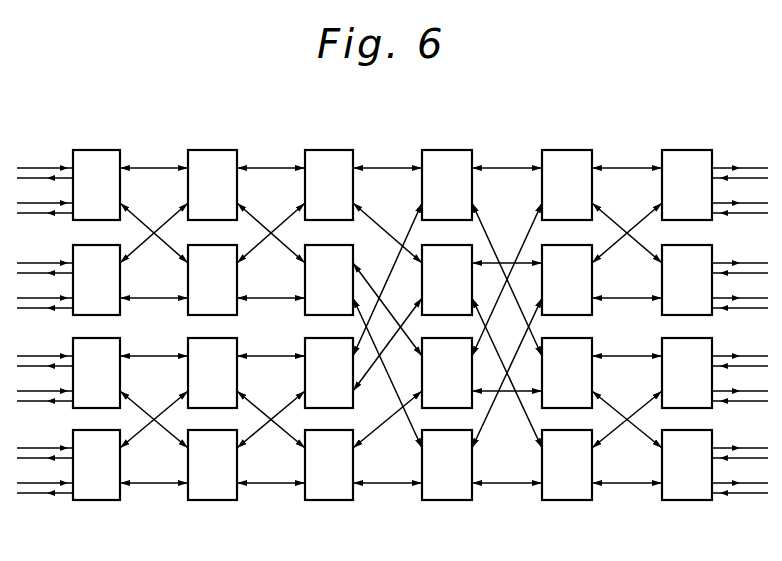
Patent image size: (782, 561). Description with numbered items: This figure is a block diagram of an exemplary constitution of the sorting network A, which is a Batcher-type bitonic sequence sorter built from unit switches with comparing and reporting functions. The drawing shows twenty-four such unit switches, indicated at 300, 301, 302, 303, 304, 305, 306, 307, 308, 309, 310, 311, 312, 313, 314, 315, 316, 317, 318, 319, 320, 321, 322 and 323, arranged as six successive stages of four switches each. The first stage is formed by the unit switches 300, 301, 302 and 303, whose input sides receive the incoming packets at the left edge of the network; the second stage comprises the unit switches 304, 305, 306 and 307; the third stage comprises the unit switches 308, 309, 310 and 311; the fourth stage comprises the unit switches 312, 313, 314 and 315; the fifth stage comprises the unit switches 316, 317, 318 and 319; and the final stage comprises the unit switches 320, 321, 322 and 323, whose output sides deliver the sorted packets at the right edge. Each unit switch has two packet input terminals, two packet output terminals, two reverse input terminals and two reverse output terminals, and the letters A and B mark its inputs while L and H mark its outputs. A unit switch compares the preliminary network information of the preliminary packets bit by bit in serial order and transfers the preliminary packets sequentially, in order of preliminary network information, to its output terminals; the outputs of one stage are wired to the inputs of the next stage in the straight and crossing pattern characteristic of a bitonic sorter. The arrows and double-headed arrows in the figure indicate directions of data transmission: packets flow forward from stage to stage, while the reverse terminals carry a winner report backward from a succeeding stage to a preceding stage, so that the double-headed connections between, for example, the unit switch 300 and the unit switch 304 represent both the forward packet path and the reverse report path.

The unit switch with comparing and reporting functions 300 is at (97, 150).
The unit switch with comparing and reporting functions 301 is at (86, 245).
The unit switch with comparing and reporting functions 302 is at (86, 338).
The unit switch with comparing and reporting functions 303 is at (86, 430).
The unit switch with comparing and reporting functions 304 is at (213, 150).
The unit switch with comparing and reporting functions 305 is at (201, 245).
The unit switch with comparing and reporting functions 306 is at (201, 338).
The unit switch with comparing and reporting functions 307 is at (201, 430).
The unit switch with comparing and reporting functions 308 is at (329, 150).
The unit switch with comparing and reporting functions 309 is at (318, 245).
The unit switch with comparing and reporting functions 310 is at (318, 338).
The unit switch with comparing and reporting functions 311 is at (318, 430).
The unit switch with comparing and reporting functions 312 is at (447, 150).
The unit switch with comparing and reporting functions 313 is at (435, 245).
The unit switch with comparing and reporting functions 314 is at (435, 338).
The unit switch with comparing and reporting functions 315 is at (435, 430).
The unit switch with comparing and reporting functions 316 is at (567, 150).
The unit switch with comparing and reporting functions 317 is at (555, 245).
The unit switch with comparing and reporting functions 318 is at (555, 338).
The unit switch with comparing and reporting functions 319 is at (555, 430).
The unit switch with comparing and reporting functions 320 is at (687, 150).
The unit switch with comparing and reporting functions 321 is at (675, 245).
The unit switch with comparing and reporting functions 322 is at (675, 338).
The unit switch with comparing and reporting functions 323 is at (675, 430).